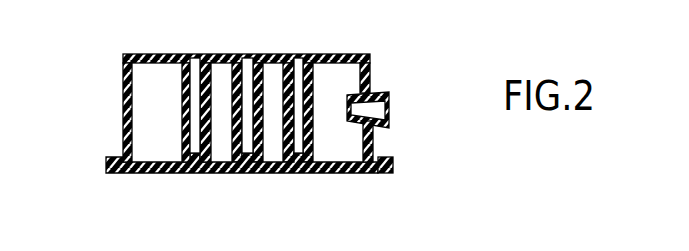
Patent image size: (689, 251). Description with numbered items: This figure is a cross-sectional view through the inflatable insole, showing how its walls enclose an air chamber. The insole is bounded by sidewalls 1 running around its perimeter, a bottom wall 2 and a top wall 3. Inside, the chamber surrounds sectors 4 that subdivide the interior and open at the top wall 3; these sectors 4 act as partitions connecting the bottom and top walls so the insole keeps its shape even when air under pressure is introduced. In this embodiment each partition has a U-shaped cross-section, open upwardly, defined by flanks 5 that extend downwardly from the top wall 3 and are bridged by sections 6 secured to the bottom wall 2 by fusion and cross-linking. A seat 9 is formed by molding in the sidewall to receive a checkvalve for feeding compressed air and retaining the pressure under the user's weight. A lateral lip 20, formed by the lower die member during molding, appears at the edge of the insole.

The sidewalls 1 is at (124, 117).
The bottom wall 2 is at (156, 175).
The top wall 3 is at (160, 54).
The sectors 4 is at (313, 82).
The flanks 5 is at (233, 143).
The sections 6 is at (327, 143).
The seat 9 is at (375, 92).
The lateral lip 20 is at (382, 154).